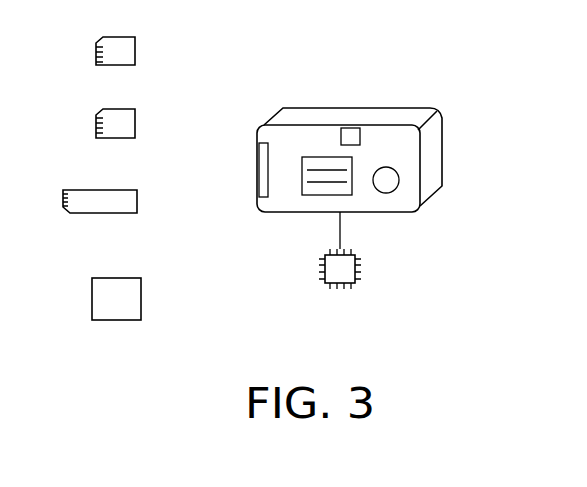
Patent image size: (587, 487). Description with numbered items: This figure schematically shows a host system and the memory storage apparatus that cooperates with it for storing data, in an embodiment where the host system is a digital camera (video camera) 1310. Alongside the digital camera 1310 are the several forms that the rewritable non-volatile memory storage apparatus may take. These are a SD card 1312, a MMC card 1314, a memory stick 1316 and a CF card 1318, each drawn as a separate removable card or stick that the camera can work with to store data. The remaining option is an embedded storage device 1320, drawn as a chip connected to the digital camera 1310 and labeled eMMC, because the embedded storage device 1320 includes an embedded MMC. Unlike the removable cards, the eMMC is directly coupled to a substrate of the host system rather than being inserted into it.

The digital camera 1310 is at (442, 145).
The SD card 1312 is at (135, 45).
The MMC card 1314 is at (135, 113).
The memory stick 1316 is at (137, 200).
The CF card 1318 is at (141, 293).
The embedded storage device 1320 is at (361, 272).